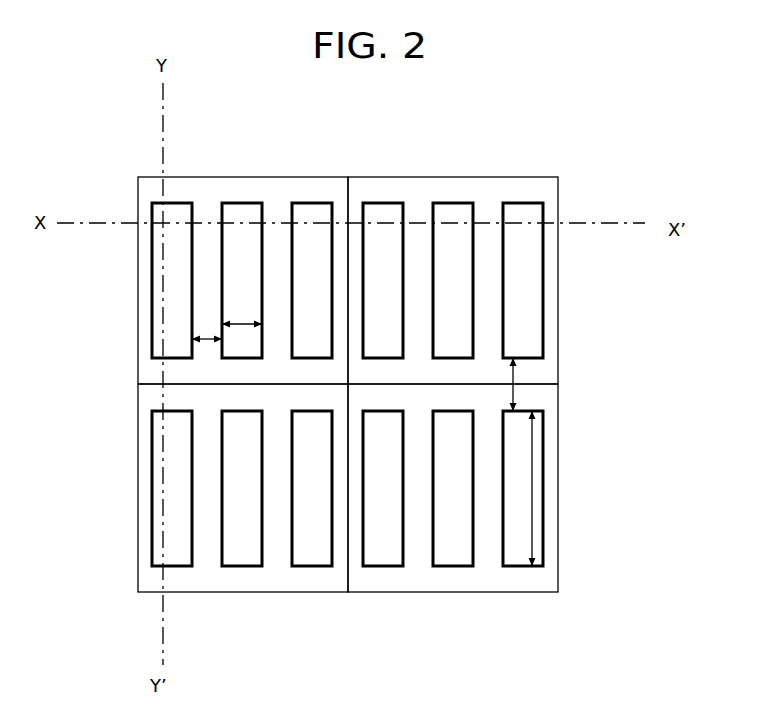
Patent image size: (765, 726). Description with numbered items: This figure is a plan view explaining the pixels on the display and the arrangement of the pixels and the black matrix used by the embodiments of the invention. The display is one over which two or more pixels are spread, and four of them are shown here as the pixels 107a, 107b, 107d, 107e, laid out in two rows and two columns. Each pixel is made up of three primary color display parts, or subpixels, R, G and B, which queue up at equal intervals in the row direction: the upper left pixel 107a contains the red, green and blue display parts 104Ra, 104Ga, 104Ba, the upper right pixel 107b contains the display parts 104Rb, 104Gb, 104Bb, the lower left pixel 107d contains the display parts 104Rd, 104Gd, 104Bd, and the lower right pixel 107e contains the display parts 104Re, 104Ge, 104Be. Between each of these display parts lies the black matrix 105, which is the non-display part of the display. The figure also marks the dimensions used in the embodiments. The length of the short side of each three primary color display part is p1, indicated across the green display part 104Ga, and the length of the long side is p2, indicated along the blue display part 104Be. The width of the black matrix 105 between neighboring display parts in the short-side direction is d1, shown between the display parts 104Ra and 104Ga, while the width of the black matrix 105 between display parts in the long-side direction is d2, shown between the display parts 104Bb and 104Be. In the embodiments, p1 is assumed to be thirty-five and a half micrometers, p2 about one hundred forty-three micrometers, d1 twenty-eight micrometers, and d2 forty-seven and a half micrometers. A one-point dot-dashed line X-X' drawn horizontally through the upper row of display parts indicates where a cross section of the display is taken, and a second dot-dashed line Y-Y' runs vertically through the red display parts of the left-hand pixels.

The red three primary color display part 104Ra is at (152, 203).
The green three primary color display part 104Ga is at (243, 203).
The blue three primary color display part 104Ba is at (310, 203).
The red three primary color display part 104Rb is at (372, 203).
The green three primary color display part 104Gb is at (450, 203).
The blue three primary color display part 104Bb is at (513, 203).
The red three primary color display part 104Rd is at (152, 566).
The green three primary color display part 104Gd is at (242, 566).
The blue three primary color display part 104Bd is at (315, 566).
The red three primary color display part 104Re is at (385, 566).
The green three primary color display part 104Ge is at (453, 566).
The blue three primary color display part 104Be is at (522, 566).
The black matrix 105 is at (187, 187).
The pixel 107a is at (137, 292).
The pixel 107b is at (558, 277).
The pixel 107d is at (137, 502).
The pixel 107e is at (558, 493).
The width of black matrix in short-side direction d1 is at (205, 342).
The length of short side of display part p1 is at (243, 327).
The width of black matrix in long-side direction d2 is at (514, 393).
The length of long side of display part p2 is at (533, 443).